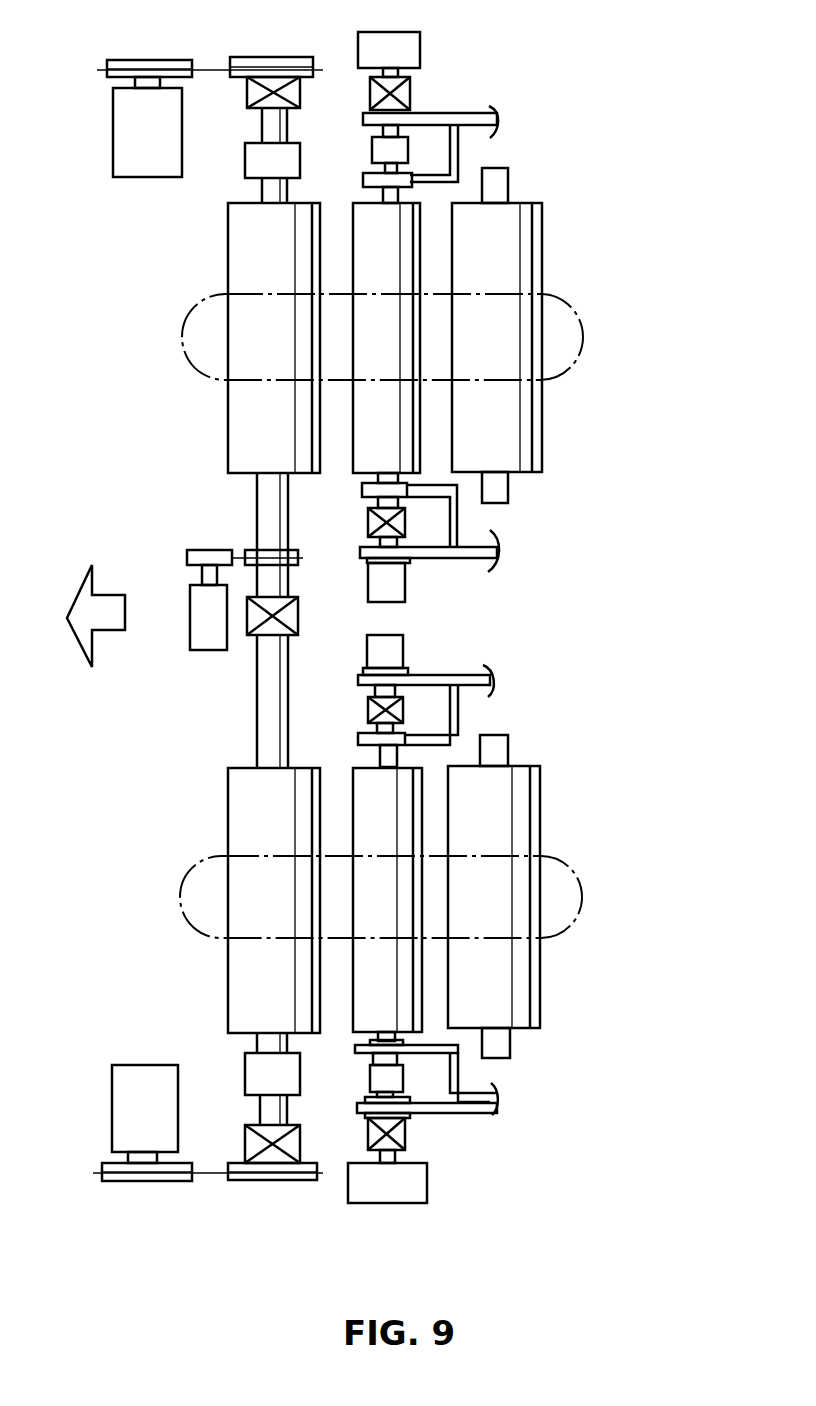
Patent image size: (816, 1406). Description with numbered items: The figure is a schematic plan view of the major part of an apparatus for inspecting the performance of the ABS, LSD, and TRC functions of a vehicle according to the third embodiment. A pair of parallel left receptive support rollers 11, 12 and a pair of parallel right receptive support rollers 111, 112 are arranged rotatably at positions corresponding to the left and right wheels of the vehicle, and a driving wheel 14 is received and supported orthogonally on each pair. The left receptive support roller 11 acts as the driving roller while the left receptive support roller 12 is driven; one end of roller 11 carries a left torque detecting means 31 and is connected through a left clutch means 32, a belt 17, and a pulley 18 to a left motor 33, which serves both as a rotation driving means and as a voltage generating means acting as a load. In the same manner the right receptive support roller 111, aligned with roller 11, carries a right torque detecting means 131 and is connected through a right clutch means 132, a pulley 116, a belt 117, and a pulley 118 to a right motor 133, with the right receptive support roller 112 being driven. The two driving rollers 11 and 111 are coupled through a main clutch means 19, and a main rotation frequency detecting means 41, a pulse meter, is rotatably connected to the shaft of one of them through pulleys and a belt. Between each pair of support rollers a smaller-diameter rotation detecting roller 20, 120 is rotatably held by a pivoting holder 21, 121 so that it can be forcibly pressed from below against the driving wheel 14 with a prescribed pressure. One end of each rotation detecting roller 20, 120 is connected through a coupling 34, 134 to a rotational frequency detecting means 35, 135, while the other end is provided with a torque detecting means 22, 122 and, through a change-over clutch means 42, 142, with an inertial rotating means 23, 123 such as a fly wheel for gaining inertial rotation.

The left receptive support roller 11 is at (243, 820).
The left receptive support roller 12 is at (530, 800).
The left driving wheel 14 is at (180, 340).
The belt 17 is at (208, 1176).
The pulley 18 is at (185, 1155).
The main clutch means 19 is at (300, 618).
The left rotation detecting roller 20 is at (355, 790).
The pivoting holder 21 is at (490, 668).
The left torque detecting means 22 is at (378, 1078).
The left inertial rotating means 23 is at (408, 1183).
The left torque detecting means 31 is at (245, 1063).
The left clutch means 32 is at (258, 1148).
The left motor 33 is at (112, 1090).
The coupling 34 is at (368, 705).
The left rotational frequency detecting means 35 is at (405, 650).
The main rotation frequency detecting means 41 is at (195, 607).
The left change-over clutch means 42 is at (405, 1130).
The right receptive support roller 111 is at (243, 252).
The right receptive support roller 112 is at (530, 255).
The pulley 116 is at (262, 57).
The belt 117 is at (205, 72).
The pulley 118 is at (150, 60).
The right rotation detecting roller 120 is at (365, 278).
The pivoting holder 121 is at (480, 135).
The right torque detecting means 122 is at (372, 150).
The right inertial rotating means 123 is at (410, 48).
The right torque detecting means 131 is at (245, 160).
The right clutch means 132 is at (298, 95).
The right motor 133 is at (113, 126).
The coupling 134 is at (368, 520).
The right rotational frequency detecting means 135 is at (390, 578).
The right change-over clutch means 142 is at (412, 96).